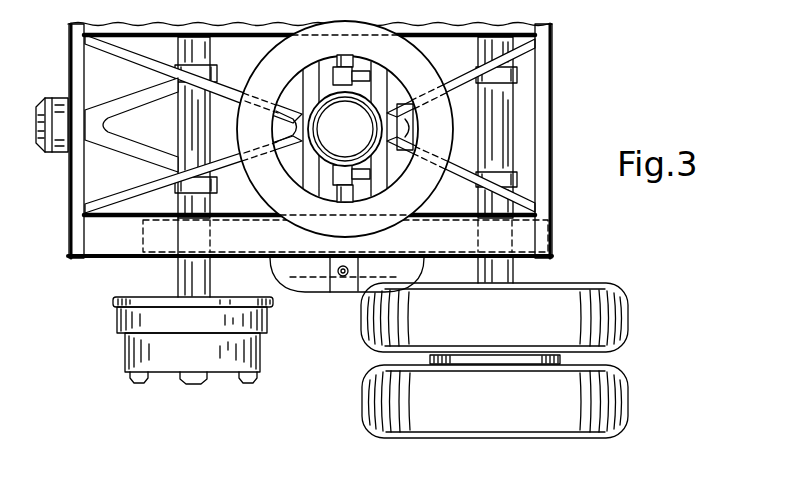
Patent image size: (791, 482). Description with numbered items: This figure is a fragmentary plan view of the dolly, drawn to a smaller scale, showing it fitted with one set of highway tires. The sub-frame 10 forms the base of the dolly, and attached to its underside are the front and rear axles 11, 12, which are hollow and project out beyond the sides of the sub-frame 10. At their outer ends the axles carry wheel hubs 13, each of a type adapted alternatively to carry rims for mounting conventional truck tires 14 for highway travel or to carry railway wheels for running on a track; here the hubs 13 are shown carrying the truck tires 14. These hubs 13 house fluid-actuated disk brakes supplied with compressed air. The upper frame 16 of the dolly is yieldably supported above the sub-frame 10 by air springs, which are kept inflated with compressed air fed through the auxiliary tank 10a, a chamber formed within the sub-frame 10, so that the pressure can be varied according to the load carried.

The sub-frame 10 is at (78, 182).
The auxiliary tank 10a is at (552, 240).
The front axle 11 is at (186, 110).
The rear axle 12 is at (513, 108).
The wheel hub 13 is at (104, 317).
The truck tires 14 is at (625, 390).
The upper frame 16 is at (107, 247).